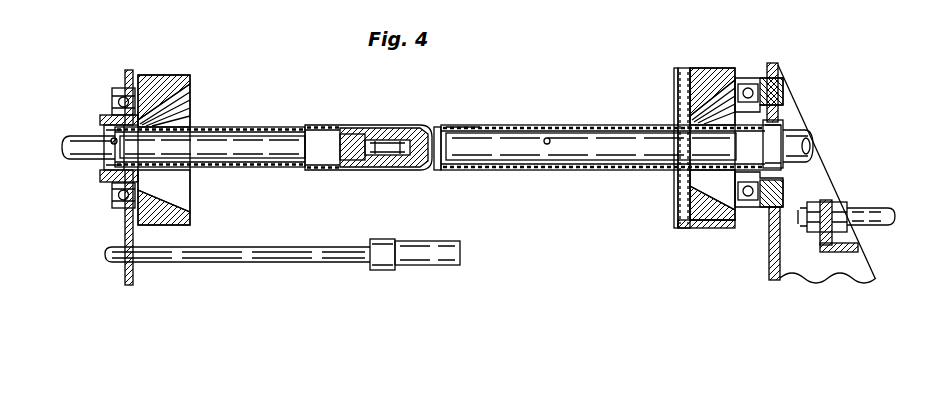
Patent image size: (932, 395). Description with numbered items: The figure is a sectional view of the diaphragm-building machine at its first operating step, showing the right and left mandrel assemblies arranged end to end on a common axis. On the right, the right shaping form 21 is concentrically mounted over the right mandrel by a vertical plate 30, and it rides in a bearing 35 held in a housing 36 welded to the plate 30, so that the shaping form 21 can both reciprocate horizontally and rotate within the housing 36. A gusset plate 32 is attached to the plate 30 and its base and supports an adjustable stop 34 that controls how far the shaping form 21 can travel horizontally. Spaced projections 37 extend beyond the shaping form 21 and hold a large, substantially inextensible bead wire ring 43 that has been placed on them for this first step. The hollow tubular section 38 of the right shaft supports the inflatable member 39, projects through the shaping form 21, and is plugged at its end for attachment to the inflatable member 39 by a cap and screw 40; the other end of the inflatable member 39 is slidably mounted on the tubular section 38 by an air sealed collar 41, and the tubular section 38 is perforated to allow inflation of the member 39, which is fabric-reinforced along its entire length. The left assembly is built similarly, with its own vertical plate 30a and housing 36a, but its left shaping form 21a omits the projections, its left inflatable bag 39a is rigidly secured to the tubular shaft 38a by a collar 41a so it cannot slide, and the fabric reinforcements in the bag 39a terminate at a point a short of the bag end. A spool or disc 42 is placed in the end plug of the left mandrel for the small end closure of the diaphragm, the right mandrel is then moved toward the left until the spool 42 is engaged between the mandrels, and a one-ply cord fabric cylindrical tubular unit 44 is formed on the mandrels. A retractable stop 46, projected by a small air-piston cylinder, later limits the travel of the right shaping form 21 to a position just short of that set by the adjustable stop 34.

The right shaping form 21 is at (717, 80).
The left shaping form 21a is at (148, 83).
The vertical plate 30 is at (770, 253).
The vertical plate of left assembly 30a is at (135, 280).
The gusset plate 32 is at (803, 270).
The adjustable stop 34 is at (873, 223).
The bearing 35 is at (748, 92).
The housing 36 is at (748, 212).
The housing of left assembly 36a is at (114, 92).
The spaced projections 37 is at (698, 68).
The hollow tubular section of shaft 38 is at (500, 155).
The tubular shaft of left mandrel 38a is at (238, 157).
The inflatable member 39 is at (598, 172).
The left inflatable bag 39a is at (222, 128).
The cap and screw 40 is at (445, 124).
The air sealed collar 41 is at (773, 127).
The collar 41a is at (105, 166).
The spool or disc 42 is at (438, 172).
The bead wire ring 43 is at (677, 92).
The cylindrical tubular unit 44 is at (462, 114).
The stop 46 is at (415, 261).
The point a is at (373, 128).